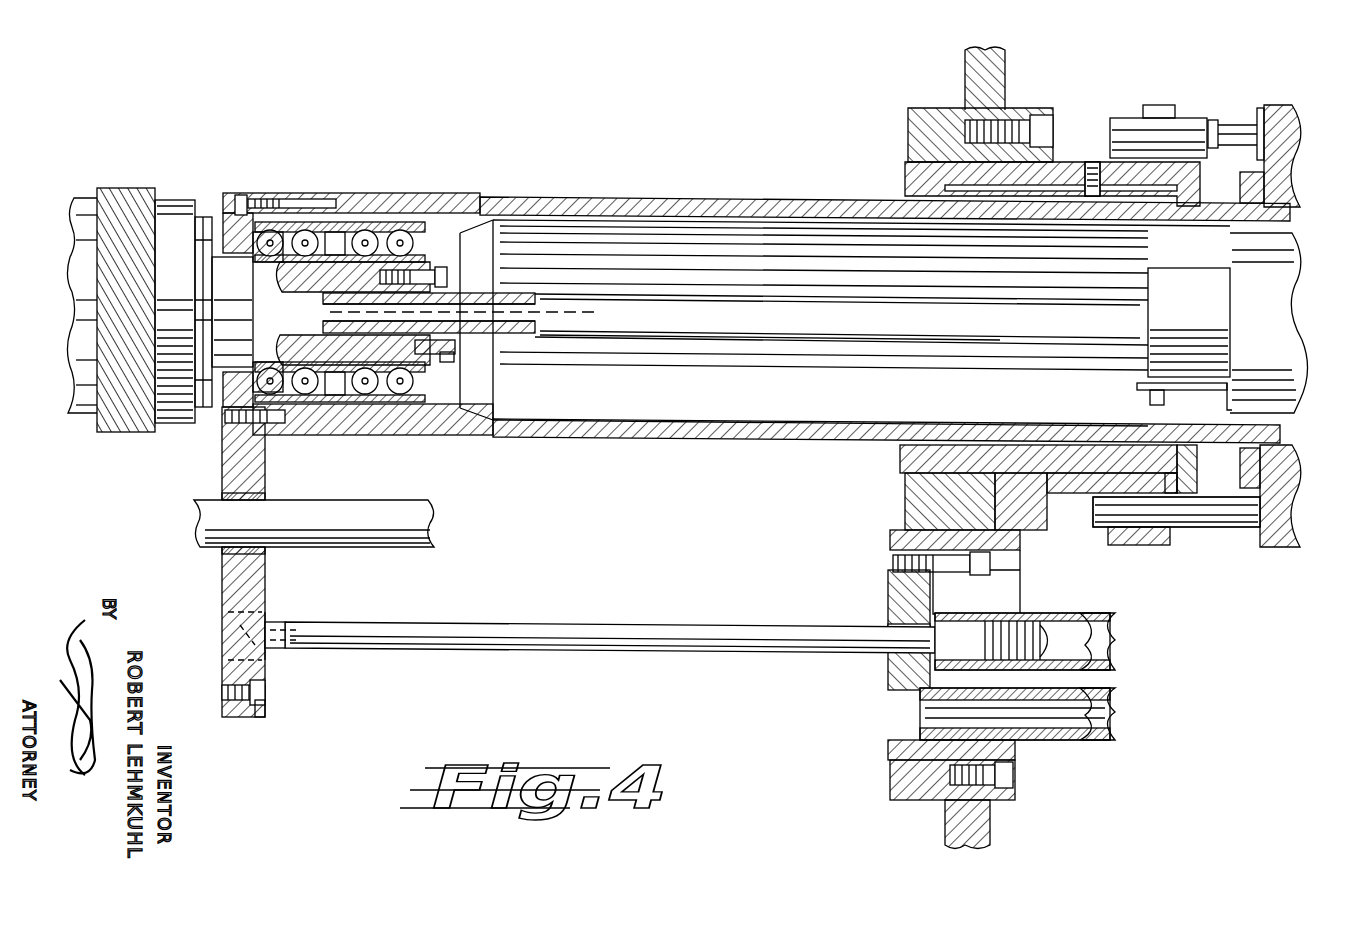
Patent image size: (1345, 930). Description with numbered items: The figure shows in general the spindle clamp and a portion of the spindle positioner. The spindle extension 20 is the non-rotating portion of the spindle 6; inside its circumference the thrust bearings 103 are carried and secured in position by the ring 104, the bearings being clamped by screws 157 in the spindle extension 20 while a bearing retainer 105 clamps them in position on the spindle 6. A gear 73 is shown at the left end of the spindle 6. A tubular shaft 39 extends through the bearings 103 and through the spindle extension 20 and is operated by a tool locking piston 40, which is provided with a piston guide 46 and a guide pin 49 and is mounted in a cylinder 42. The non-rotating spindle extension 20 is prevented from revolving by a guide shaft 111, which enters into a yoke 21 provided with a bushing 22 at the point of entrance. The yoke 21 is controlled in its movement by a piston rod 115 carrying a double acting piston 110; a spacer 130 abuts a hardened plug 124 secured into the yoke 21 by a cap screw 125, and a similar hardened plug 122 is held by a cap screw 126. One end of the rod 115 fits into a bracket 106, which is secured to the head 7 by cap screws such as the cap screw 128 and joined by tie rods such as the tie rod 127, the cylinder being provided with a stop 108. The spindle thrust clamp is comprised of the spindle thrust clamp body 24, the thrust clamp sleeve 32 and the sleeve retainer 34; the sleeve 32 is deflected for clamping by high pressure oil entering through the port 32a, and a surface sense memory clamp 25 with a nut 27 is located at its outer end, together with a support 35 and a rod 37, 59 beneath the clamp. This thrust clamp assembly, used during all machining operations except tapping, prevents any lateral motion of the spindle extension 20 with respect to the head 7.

The gear 73 is at (130, 190).
The spindle 6 is at (203, 215).
The spindle extension 20 is at (540, 195).
The thrust bearings 103 is at (352, 222).
The ring 104 is at (432, 268).
The bearing retainer 105 is at (448, 262).
The tubular shaft 39 is at (625, 305).
The tool locking piston 40 is at (1148, 278).
The cylinder 42 is at (1300, 395).
The piston guide 46 is at (1137, 386).
The guide pin 49 is at (1150, 400).
The thrust clamp sleeve 32 is at (912, 140).
The port 32a is at (1092, 160).
The spindle thrust clamp body 24 is at (1032, 118).
The nut 27 is at (1215, 122).
The surface sense memory clamp 25 is at (1282, 105).
The support 35 is at (1252, 470).
The sleeve retainer 34 is at (1188, 493).
The rod 37 is at (1223, 527).
The rod 59 is at (1176, 512).
The tie rod 127 is at (890, 545).
The bracket 106 is at (888, 596).
The piston rod 115 is at (565, 625).
The piston 110 is at (1045, 612).
The stop 108 is at (920, 738).
The head 7 is at (937, 831).
The cap screw 128 is at (1013, 775).
The yoke 21 is at (276, 479).
The screw 157 is at (228, 420).
The guide shaft 111 is at (398, 505).
The bushing 22 is at (268, 555).
The cap screw 125 is at (222, 618).
The spacer 130 is at (270, 625).
The hardened plug 124 is at (266, 652).
The hardened plug 122 is at (268, 688).
The cap screw 126 is at (260, 717).